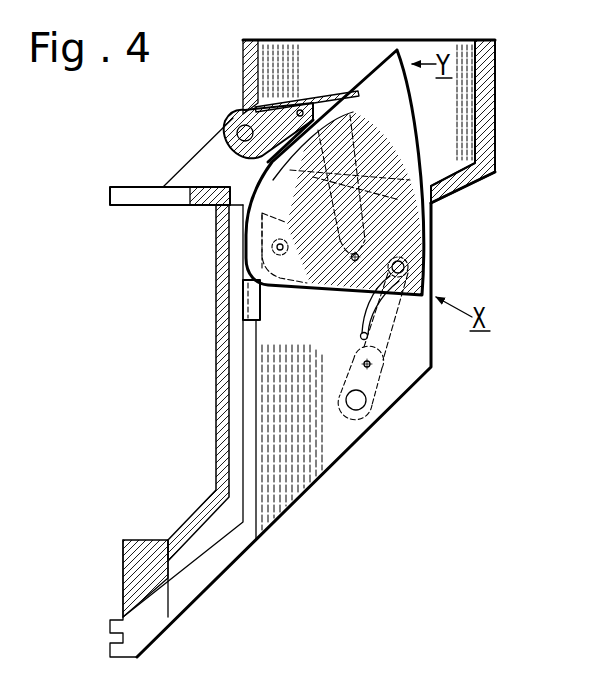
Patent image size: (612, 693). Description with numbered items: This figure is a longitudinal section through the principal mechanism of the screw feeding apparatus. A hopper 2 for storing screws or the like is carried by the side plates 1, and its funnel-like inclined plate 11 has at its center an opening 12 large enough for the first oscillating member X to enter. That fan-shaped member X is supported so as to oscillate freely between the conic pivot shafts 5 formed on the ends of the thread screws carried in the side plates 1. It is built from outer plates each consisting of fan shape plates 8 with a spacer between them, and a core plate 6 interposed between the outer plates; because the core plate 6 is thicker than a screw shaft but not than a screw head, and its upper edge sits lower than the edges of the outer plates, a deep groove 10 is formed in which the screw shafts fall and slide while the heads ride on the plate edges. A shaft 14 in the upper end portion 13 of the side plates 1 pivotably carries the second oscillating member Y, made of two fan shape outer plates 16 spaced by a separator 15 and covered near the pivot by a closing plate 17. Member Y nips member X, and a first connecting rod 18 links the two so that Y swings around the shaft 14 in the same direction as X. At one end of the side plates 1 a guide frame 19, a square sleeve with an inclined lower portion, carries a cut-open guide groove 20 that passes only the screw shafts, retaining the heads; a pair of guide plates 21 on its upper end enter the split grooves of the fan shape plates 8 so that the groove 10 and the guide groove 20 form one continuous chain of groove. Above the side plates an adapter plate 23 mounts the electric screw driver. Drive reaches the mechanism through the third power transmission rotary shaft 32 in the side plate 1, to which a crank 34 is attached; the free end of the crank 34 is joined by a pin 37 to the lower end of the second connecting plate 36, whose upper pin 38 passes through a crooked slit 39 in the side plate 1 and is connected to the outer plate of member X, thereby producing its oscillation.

The side plates 1 is at (420, 377).
The hopper 2 is at (498, 97).
The conic pivot shafts 5 is at (280, 240).
The core plate 6 is at (417, 223).
The fan shape plates 8 is at (328, 128).
The deep groove 10 is at (361, 130).
The funnel-like inclined plate 11 is at (473, 183).
The opening 12 is at (423, 187).
The upper end portion 13 is at (200, 157).
The shaft 14 is at (240, 116).
The separator 15 is at (237, 182).
The fan shape outer plates 16 is at (405, 103).
The closing plate 17 is at (350, 92).
The first connecting rod 18 is at (355, 238).
The guide frame 19 is at (218, 307).
The guide groove 20 is at (250, 383).
The guide plates 21 is at (262, 305).
The adapter plate 23 is at (133, 193).
The third power transmission rotary shaft 32 is at (360, 407).
The crank 34 is at (373, 383).
The second connecting plate 36 is at (390, 333).
The pin 37 is at (366, 365).
The pin 38 is at (407, 272).
The crooked slit 39 is at (387, 313).